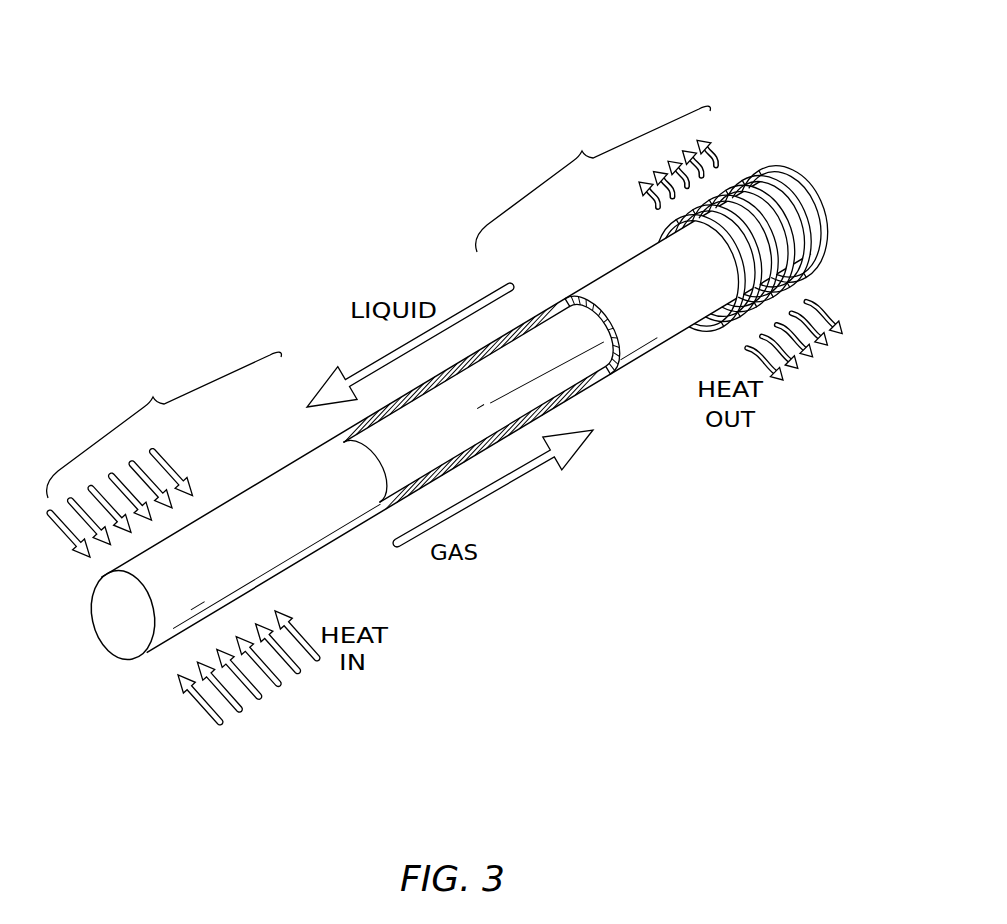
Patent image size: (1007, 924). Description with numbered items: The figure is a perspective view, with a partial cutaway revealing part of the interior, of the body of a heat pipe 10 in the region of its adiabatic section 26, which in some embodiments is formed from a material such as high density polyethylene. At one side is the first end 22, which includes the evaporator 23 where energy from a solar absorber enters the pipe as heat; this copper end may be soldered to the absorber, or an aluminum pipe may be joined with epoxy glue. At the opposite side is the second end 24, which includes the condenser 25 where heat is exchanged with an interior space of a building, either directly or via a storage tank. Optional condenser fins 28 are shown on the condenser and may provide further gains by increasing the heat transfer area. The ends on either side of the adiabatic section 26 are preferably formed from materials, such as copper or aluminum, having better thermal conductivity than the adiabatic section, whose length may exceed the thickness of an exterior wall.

The heat pipe 10 is at (240, 85).
The first end 22 is at (164, 454).
The evaporator 23 is at (181, 598).
The second end 24 is at (596, 179).
The condenser 25 is at (765, 205).
The adiabatic section 26 is at (472, 422).
The condenser fins 28 is at (690, 219).